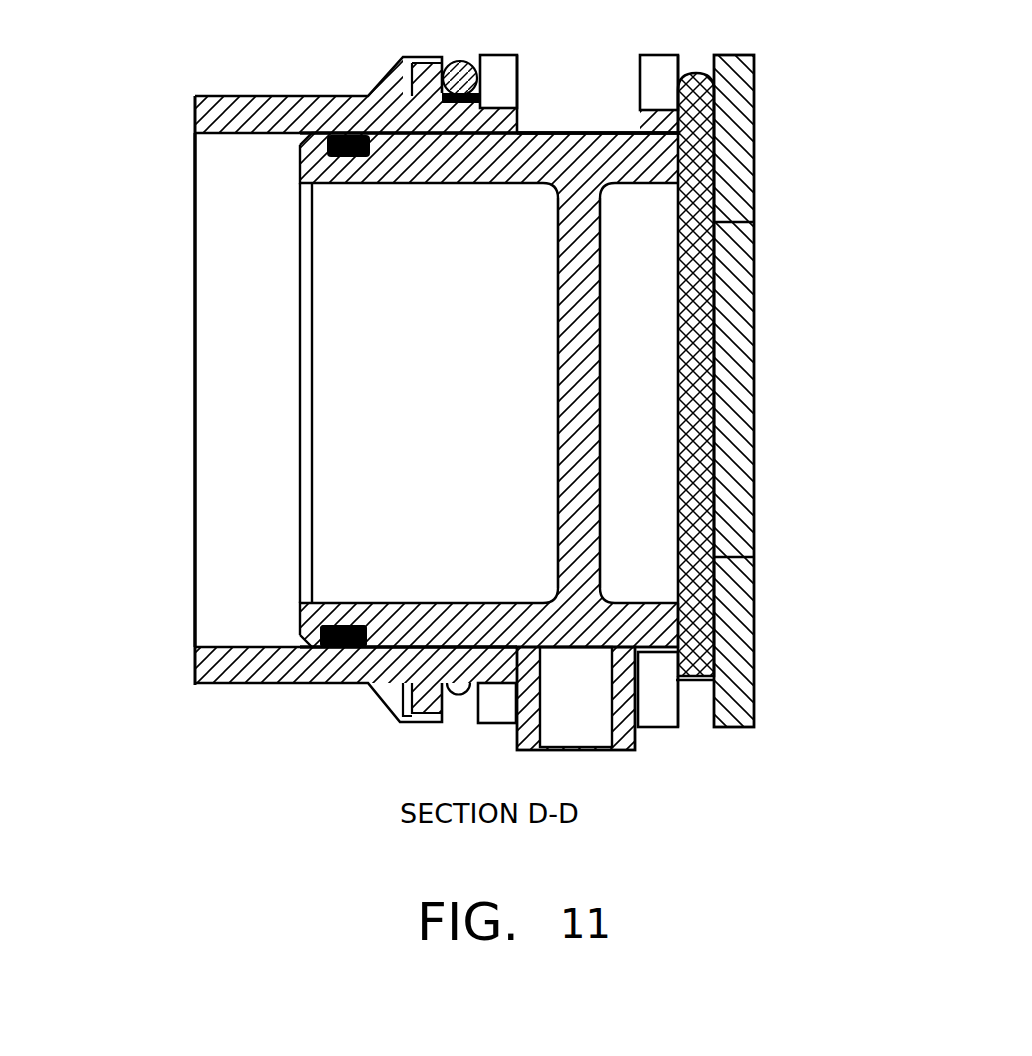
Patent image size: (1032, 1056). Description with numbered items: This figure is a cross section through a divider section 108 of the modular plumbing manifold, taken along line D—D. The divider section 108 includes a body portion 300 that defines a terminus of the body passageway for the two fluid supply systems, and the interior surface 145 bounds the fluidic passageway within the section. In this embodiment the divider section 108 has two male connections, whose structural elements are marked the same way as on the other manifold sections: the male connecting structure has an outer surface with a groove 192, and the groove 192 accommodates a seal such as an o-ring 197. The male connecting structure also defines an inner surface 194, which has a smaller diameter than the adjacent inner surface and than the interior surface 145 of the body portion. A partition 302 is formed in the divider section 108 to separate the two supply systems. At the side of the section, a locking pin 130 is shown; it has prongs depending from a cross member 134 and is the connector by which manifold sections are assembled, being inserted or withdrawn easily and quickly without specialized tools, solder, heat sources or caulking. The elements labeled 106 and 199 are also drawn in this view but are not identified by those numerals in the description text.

The outer housing 106 is at (258, 94).
The divider section 108 is at (580, 126).
The interior surface 145 is at (270, 226).
The inner surface 194 is at (396, 601).
The sleeve wall 199 is at (298, 625).
The body portion 300 is at (547, 131).
The partition 302 is at (603, 290).
The locking pin 130 is at (713, 470).
The cross member 134 is at (795, 400).
The groove 192 is at (345, 650).
The o-ring 197 is at (247, 748).